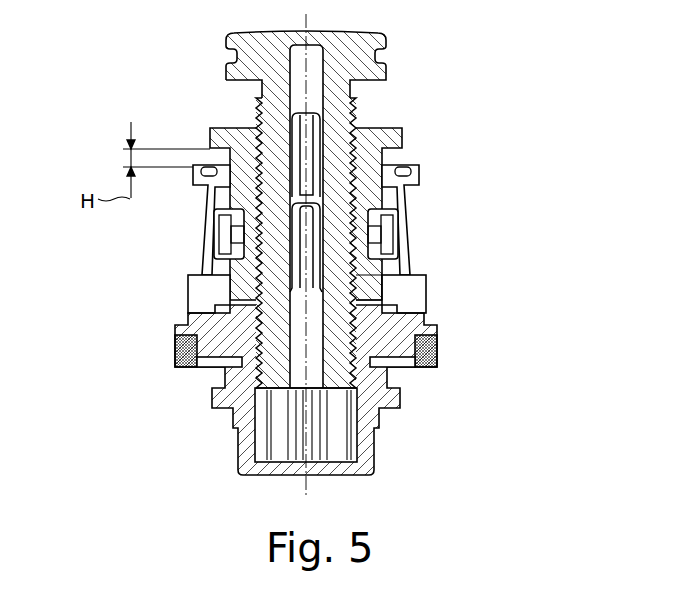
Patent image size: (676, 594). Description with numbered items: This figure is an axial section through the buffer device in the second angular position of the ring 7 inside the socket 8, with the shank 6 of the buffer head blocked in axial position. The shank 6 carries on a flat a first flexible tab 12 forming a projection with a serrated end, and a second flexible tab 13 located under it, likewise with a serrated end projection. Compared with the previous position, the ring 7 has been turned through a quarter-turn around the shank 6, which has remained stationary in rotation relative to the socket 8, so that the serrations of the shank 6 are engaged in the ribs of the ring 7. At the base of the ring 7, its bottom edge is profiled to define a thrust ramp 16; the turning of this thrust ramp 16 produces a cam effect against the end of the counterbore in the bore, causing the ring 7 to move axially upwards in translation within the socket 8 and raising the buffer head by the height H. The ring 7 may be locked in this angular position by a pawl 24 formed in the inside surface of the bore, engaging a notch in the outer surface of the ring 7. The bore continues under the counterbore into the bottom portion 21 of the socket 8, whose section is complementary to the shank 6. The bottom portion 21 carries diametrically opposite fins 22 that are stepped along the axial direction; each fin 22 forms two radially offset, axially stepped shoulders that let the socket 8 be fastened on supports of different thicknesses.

The shank 6 is at (355, 110).
The ring 7 is at (400, 138).
The socket 8 is at (413, 252).
The first flexible tab 12 is at (300, 145).
The second flexible tab 13 is at (307, 232).
The thrust ramp 16 is at (360, 279).
The bottom portion of the socket 21 is at (373, 450).
The fins 22 is at (226, 374).
The pawl 24 is at (226, 228).